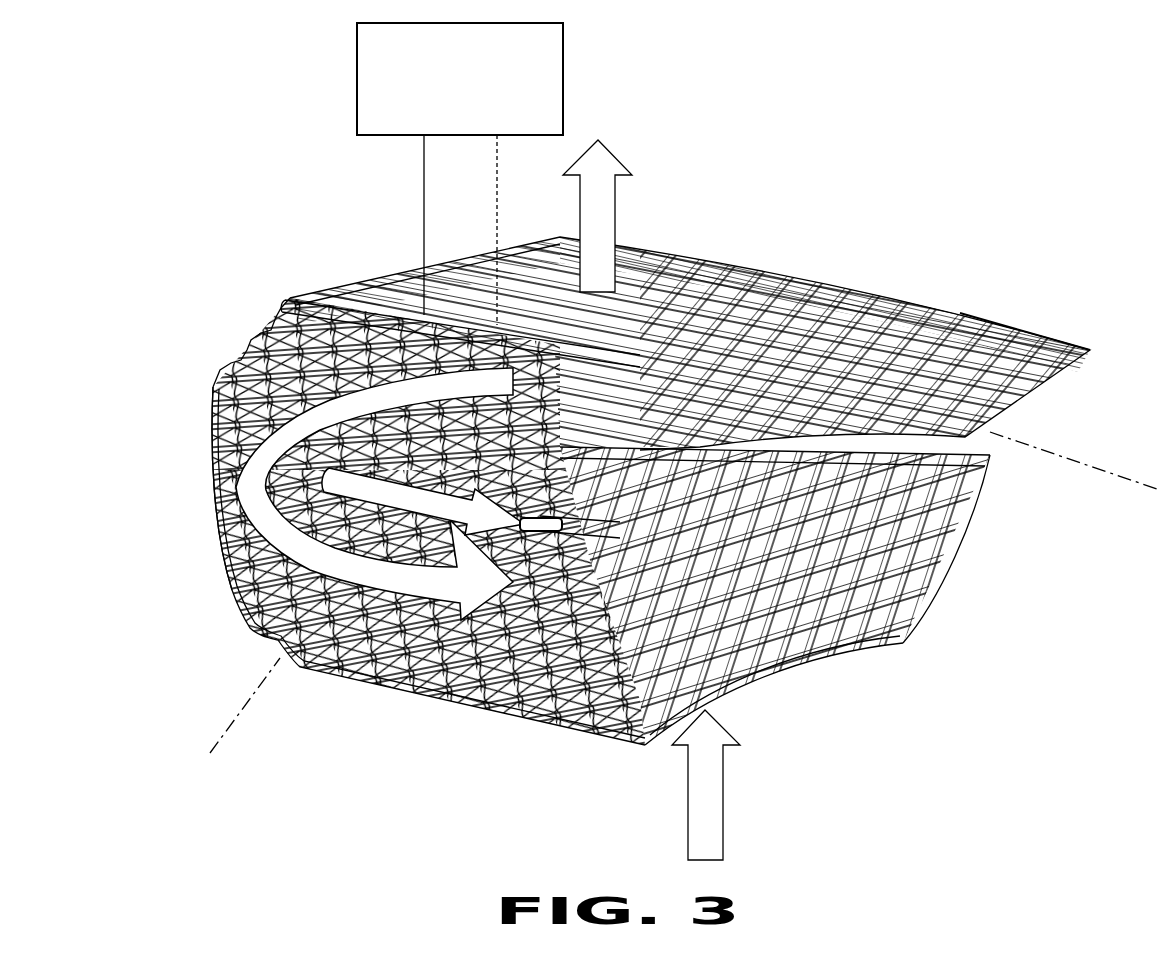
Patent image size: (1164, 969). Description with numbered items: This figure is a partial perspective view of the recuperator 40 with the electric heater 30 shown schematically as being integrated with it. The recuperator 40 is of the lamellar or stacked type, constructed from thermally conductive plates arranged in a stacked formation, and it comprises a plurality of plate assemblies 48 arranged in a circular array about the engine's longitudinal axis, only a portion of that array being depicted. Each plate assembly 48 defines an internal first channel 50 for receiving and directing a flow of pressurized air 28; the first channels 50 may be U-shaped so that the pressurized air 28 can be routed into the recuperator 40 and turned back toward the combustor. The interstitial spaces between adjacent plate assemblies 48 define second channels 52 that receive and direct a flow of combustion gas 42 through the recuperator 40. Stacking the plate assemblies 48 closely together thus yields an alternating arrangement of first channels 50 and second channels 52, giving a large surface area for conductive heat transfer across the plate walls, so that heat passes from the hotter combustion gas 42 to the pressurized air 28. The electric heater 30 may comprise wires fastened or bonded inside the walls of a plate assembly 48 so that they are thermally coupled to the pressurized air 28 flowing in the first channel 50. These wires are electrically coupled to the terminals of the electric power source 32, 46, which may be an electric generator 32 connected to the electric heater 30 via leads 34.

The pressurized air 28 is at (253, 460).
The electric heater 30 is at (483, 237).
The electric generator 32 is at (392, 79).
The leads 34 is at (424, 168).
The recuperator 40 is at (621, 439).
The combustion gas 42 is at (600, 214).
The electric power source 46 is at (357, 78).
The plate assembly 48 is at (377, 267).
The first channel 50 is at (877, 620).
The second channel 52 is at (967, 300).